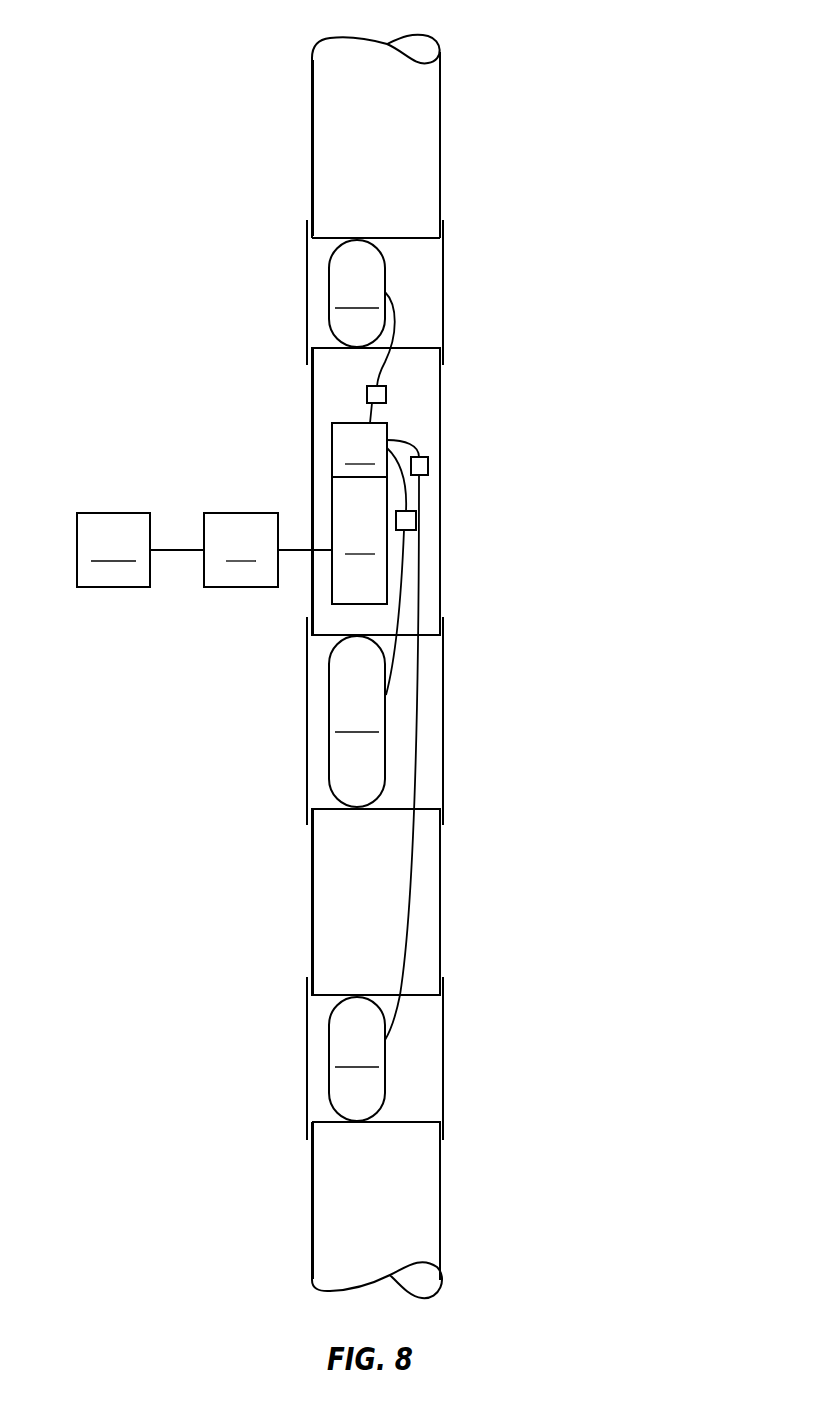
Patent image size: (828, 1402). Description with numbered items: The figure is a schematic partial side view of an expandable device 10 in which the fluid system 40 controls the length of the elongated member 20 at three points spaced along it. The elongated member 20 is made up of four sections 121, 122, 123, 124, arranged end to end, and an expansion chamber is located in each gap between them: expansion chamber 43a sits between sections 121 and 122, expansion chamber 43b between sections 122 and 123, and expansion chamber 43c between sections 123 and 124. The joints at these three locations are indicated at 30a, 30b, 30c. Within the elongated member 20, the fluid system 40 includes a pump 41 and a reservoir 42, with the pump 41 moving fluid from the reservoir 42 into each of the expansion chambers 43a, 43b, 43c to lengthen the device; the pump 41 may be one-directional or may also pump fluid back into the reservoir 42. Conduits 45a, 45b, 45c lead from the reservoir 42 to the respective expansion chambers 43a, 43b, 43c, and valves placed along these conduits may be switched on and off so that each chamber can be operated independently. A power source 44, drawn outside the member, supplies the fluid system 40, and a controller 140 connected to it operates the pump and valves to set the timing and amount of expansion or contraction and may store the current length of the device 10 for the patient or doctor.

The expandable device 10 is at (597, 387).
The elongated member 20 is at (330, 165).
The first sensor station 30a is at (445, 272).
The second sensor station 30b is at (445, 697).
The third sensor station 30c is at (445, 1040).
The fluid system 40 is at (205, 476).
The pump 41 is at (359, 450).
The reservoir 42 is at (359, 540).
The expansion chamber 43a is at (357, 293).
The expansion chamber 43b is at (357, 721).
The expansion chamber 43c is at (357, 1059).
The power source 44 is at (268, 550).
The conduit 45a is at (388, 363).
The conduit 45b is at (398, 613).
The conduit 45c is at (408, 887).
The section 121 is at (408, 102).
The section 122 is at (403, 403).
The section 123 is at (432, 853).
The section 124 is at (420, 1204).
The controller 140 is at (140, 550).